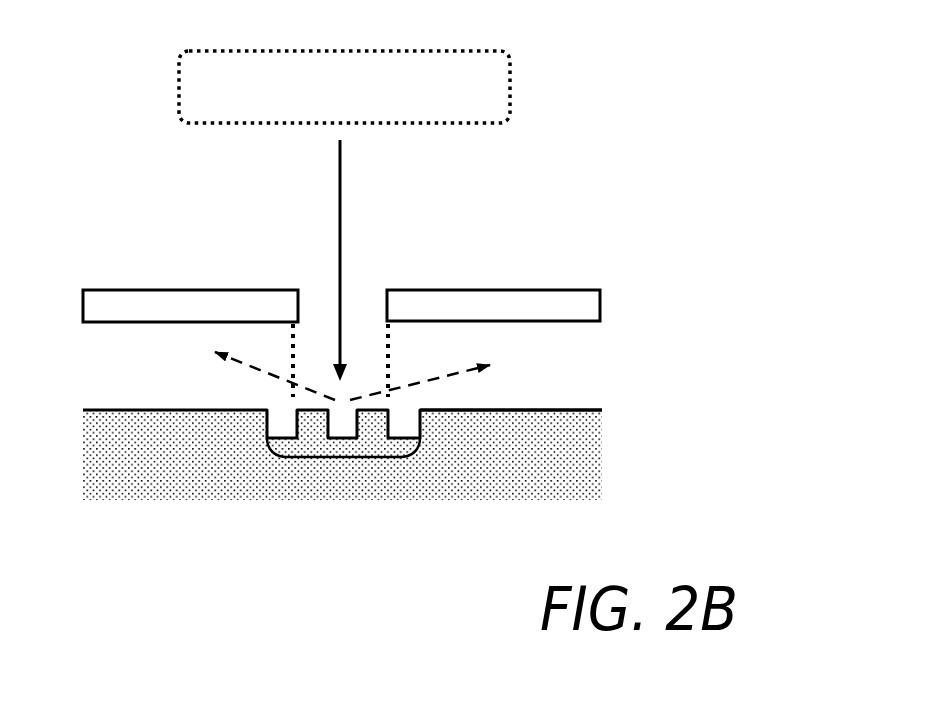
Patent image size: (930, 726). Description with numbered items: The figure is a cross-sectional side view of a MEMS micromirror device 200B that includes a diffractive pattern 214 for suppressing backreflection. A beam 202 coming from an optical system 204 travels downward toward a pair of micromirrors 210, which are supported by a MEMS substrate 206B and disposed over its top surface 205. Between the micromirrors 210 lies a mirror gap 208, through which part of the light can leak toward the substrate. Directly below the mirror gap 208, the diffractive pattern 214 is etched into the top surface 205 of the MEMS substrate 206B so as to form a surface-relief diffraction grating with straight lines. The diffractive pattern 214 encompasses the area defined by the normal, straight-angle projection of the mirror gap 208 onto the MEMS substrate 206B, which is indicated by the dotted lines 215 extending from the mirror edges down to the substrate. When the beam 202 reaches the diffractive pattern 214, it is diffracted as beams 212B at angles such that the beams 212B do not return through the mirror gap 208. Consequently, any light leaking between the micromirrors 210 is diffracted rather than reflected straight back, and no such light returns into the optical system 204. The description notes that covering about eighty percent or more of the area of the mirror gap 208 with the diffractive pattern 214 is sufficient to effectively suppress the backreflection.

The MEMS micromirror device 200B is at (175, 186).
The beam 202 is at (340, 243).
The optical system 204 is at (369, 102).
The top surface 205 is at (579, 405).
The MEMS substrate 206B is at (562, 477).
The mirror gap 208 is at (366, 263).
The micromirrors 210 is at (125, 290).
The diffracted beams 212B is at (364, 376).
The diffractive pattern 214 is at (343, 457).
The dotted lines 215 is at (296, 345).